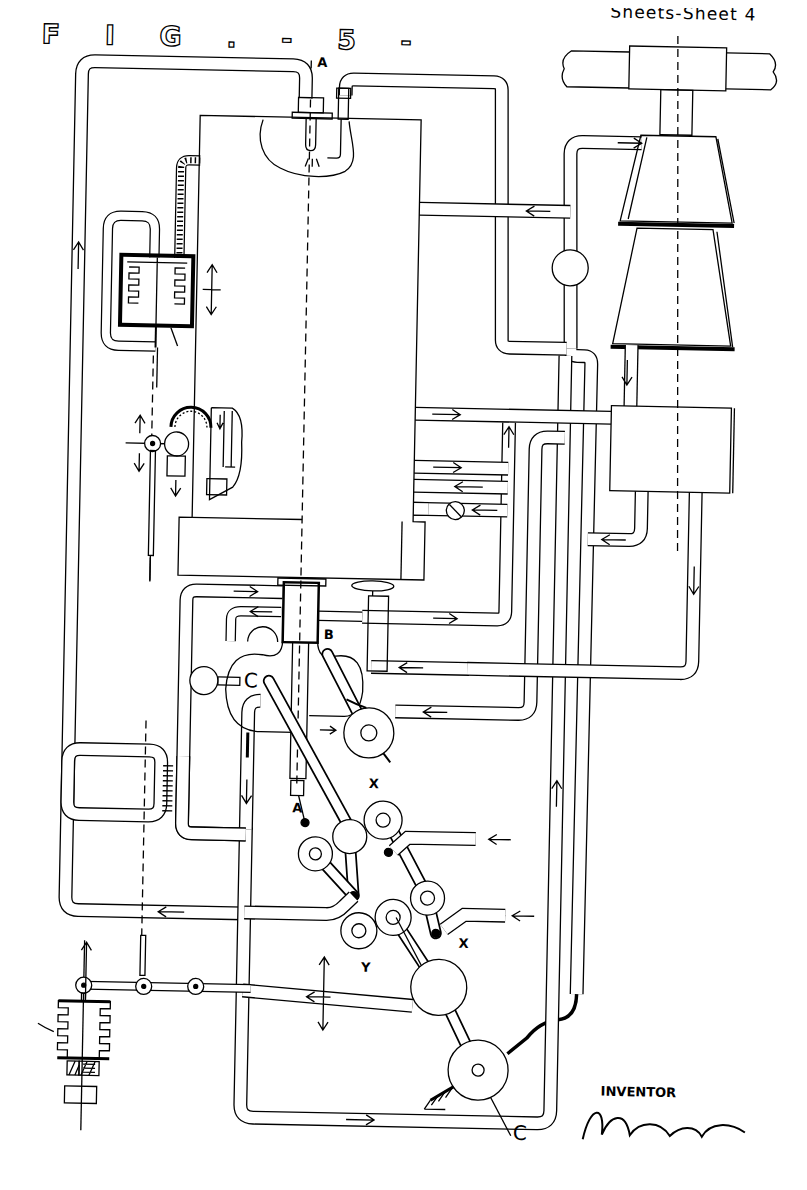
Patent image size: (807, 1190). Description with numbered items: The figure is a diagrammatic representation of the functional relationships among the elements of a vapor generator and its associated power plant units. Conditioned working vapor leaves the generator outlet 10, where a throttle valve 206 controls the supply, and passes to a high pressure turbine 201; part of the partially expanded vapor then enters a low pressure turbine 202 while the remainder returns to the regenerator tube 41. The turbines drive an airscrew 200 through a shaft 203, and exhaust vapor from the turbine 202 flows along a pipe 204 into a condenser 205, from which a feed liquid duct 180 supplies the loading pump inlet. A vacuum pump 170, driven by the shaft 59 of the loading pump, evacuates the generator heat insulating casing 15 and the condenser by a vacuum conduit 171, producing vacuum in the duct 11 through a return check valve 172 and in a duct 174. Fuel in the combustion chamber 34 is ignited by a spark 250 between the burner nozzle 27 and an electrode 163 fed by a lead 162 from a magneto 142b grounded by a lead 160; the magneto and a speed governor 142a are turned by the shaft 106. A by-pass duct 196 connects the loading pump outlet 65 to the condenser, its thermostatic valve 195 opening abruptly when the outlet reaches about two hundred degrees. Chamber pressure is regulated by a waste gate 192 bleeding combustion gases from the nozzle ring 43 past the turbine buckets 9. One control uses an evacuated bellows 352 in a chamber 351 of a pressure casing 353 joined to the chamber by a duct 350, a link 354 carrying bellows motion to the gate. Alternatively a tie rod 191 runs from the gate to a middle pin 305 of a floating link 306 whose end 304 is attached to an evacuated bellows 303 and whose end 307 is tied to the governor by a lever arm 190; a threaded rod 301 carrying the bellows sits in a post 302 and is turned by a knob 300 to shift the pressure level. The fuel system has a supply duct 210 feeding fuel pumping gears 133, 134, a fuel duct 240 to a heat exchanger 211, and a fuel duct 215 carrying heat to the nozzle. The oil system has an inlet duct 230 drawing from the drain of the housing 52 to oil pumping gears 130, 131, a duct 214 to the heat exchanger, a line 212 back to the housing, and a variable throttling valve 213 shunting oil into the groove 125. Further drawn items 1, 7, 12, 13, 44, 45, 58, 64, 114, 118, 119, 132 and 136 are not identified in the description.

The combustion chamber outlet 1 is at (432, 563).
The combustion chamber 7 is at (244, 564).
The turbine buckets 9 is at (224, 496).
The generator outlet 10 is at (430, 463).
The duct 11 is at (450, 518).
The bypass conduit 12 is at (478, 480).
The air conduit to compressor 13 is at (432, 410).
The generator heat insulating casing 15 is at (414, 321).
The fuel nozzle 27 is at (290, 112).
The combustion chamber 34 is at (298, 158).
The regenerator tube 41 is at (458, 216).
The nozzle ring 43 is at (232, 470).
The valve rod 44 is at (177, 566).
The piston rod nut 45 is at (294, 794).
The housing 52 is at (322, 596).
The pressure conduit 58 is at (414, 674).
The shaft of the loading pump 59 is at (362, 700).
The lever arm 64 is at (348, 690).
The outlet of the loading pump 65 is at (389, 651).
The shaft 106 is at (322, 874).
The conduit junction 114 is at (250, 748).
The servo supply conduit 118 is at (245, 633).
The return conduit 119 is at (248, 776).
The groove 125 is at (206, 670).
The oil pumping gear 130 is at (402, 803).
The oil pumping gear 131 is at (404, 814).
The link pivot 132 is at (410, 855).
The fuel pumping gear 133 is at (462, 908).
The fuel pumping gear 134 is at (449, 892).
The valve chamber 136 is at (258, 624).
The speed governor 142a is at (474, 992).
The magneto 142b is at (500, 1038).
The lead 160 is at (450, 1124).
The lead 162 is at (592, 930).
The electrode 163 is at (345, 112).
The vacuum pump 170 is at (398, 740).
The vacuum conduit 171 is at (505, 722).
The return check valve 172 is at (420, 507).
The duct 174 is at (618, 542).
The feed liquid duct 180 is at (648, 675).
The lever arm 190 is at (302, 1006).
The tie rod 191 is at (147, 512).
The waste gate 192 is at (226, 420).
The thermostatic valve 195 is at (395, 588).
The by-pass duct 196 is at (440, 623).
The airscrew 200 is at (606, 86).
The high pressure turbine 201 is at (712, 152).
The low pressure turbine 202 is at (716, 250).
The shaft 203 is at (690, 101).
The pipe 204 is at (642, 372).
The condenser 205 is at (727, 428).
The throttle valve 206 is at (575, 256).
The supply duct 210 is at (418, 829).
The heat exchanger 211 is at (160, 792).
The line 212 is at (80, 632).
The variable throttling valve 213 is at (240, 704).
The duct 214 is at (212, 830).
The fuel duct 215 is at (78, 214).
The inlet duct 230 is at (458, 830).
The fuel duct 240 is at (300, 921).
The spark 250 is at (330, 172).
The knob 300 is at (106, 1100).
The threaded rod 301 is at (108, 1078).
The post 302 is at (76, 1076).
The evacuated bellows 303 is at (118, 1042).
The end 304 is at (86, 989).
The middle pin 305 is at (150, 999).
The floating link 306 is at (148, 984).
The end 307 is at (198, 975).
The duct 350 is at (186, 205).
The chamber 351 is at (190, 260).
The evacuated bellows 352 is at (160, 330).
The pressure casing 353 is at (172, 350).
The link 354 is at (152, 392).